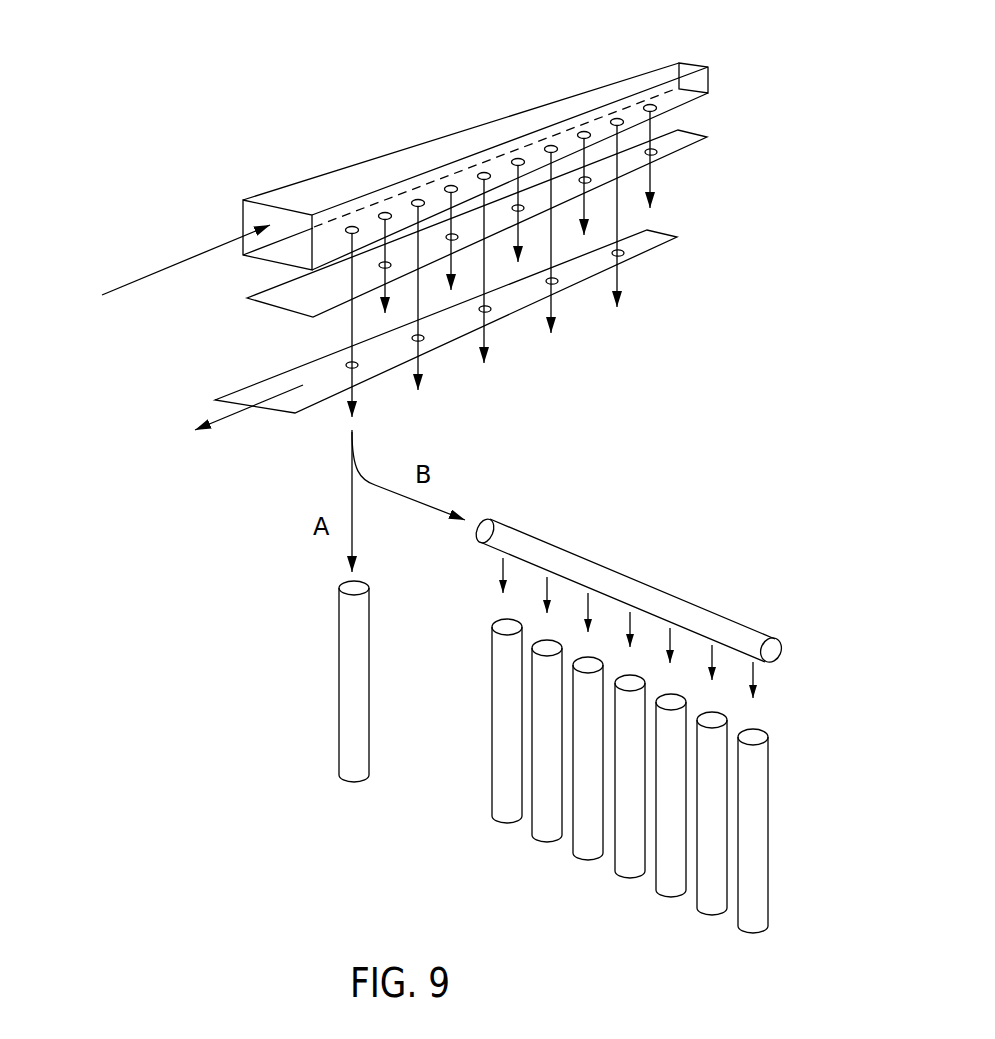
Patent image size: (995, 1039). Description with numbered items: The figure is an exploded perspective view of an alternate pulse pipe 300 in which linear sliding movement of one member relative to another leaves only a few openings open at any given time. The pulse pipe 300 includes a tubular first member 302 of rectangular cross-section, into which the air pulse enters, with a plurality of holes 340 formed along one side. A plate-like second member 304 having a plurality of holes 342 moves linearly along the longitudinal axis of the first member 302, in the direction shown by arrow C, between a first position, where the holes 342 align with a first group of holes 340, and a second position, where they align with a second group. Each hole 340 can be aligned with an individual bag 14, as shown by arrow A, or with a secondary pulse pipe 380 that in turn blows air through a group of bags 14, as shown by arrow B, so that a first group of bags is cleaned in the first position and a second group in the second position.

The pulse pipe 300 is at (173, 155).
The tubular first member 302 is at (479, 122).
The plate-like second member 304 is at (273, 307).
The holes 340 is at (615, 115).
The holes 342 is at (658, 153).
The secondary pulse pipe 380 is at (578, 554).
The bag 14 is at (339, 714).